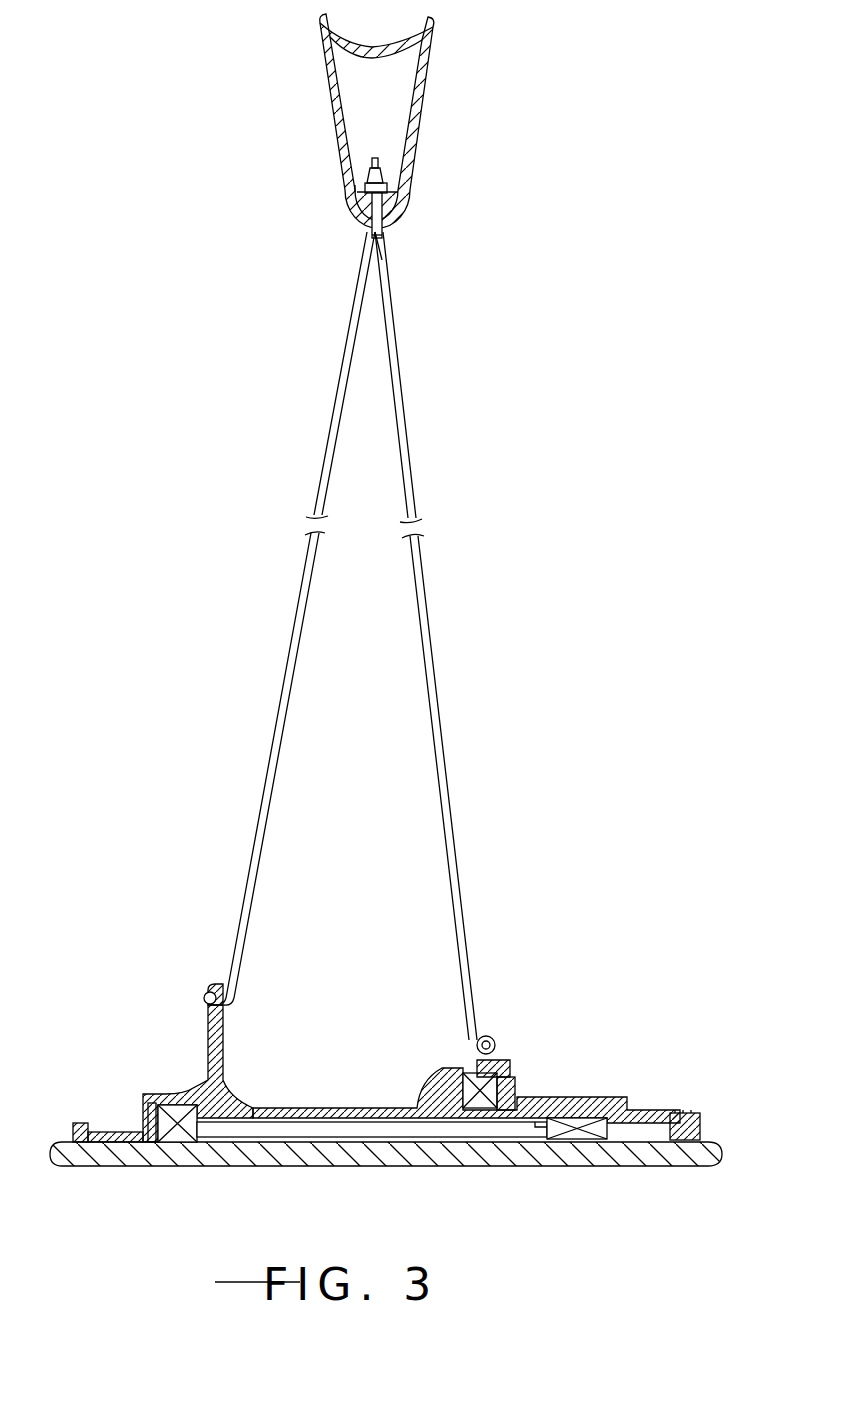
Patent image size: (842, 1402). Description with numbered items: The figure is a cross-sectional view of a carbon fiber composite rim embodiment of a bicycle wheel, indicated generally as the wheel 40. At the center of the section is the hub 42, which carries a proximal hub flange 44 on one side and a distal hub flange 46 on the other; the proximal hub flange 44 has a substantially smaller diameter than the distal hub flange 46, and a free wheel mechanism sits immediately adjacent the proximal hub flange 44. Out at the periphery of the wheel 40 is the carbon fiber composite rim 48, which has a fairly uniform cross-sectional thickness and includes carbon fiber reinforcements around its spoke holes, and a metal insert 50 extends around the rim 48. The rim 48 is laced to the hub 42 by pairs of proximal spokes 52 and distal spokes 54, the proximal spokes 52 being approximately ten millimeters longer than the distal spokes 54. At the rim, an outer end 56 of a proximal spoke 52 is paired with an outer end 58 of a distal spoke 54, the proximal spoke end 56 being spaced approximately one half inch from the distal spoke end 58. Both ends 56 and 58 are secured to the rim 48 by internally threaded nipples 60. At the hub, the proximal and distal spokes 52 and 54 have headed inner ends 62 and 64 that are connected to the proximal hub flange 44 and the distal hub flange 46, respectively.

The wheel 40 is at (484, 566).
The hub 42 is at (565, 1086).
The proximal hub flange 44 is at (490, 1035).
The distal hub flange 46 is at (205, 985).
The carbon fiber composite rim 48 is at (418, 152).
The metal insert 50 is at (353, 186).
The proximal spoke 52 is at (450, 783).
The distal spoke 54 is at (288, 662).
The outer end of proximal spoke 56 is at (386, 237).
The outer end of distal spoke 58 is at (364, 234).
The nipple 60 is at (389, 176).
The headed inner end of proximal spoke 62 is at (500, 1050).
The headed inner end of distal spoke 64 is at (205, 1005).